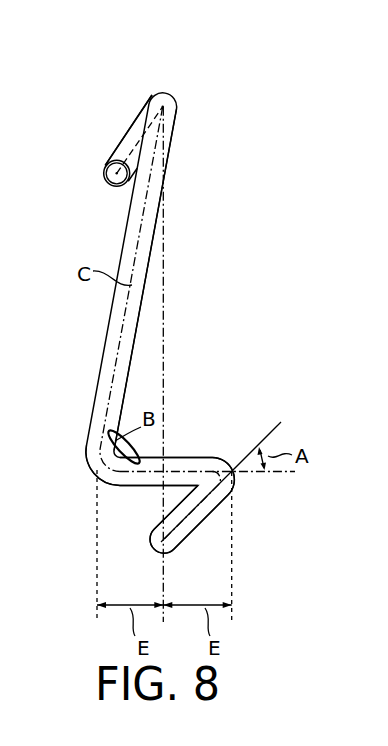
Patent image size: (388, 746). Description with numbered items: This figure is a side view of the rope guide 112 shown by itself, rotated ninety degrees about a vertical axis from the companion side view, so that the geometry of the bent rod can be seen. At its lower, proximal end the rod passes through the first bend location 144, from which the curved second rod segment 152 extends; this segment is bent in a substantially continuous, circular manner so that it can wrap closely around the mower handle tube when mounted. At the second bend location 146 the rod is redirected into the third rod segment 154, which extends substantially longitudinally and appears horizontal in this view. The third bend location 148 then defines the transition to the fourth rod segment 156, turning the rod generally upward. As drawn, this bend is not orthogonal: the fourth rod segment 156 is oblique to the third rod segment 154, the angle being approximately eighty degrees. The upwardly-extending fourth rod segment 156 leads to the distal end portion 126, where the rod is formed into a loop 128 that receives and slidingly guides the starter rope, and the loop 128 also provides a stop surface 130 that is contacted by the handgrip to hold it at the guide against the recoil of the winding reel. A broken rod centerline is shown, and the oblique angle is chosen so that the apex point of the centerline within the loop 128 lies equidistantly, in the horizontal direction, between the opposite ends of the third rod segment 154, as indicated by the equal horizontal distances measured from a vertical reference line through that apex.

The distal end portion 126 is at (177, 80).
The stop surface 130 is at (140, 117).
The loop 128 is at (118, 146).
The rope guide 112 is at (167, 183).
The fourth rod segment 156 is at (135, 243).
The third rod segment 154 is at (185, 457).
The second bend location 146 is at (225, 456).
The third bend location 148 is at (97, 470).
The second rod segment 152 is at (210, 506).
The first bend location 144 is at (160, 546).